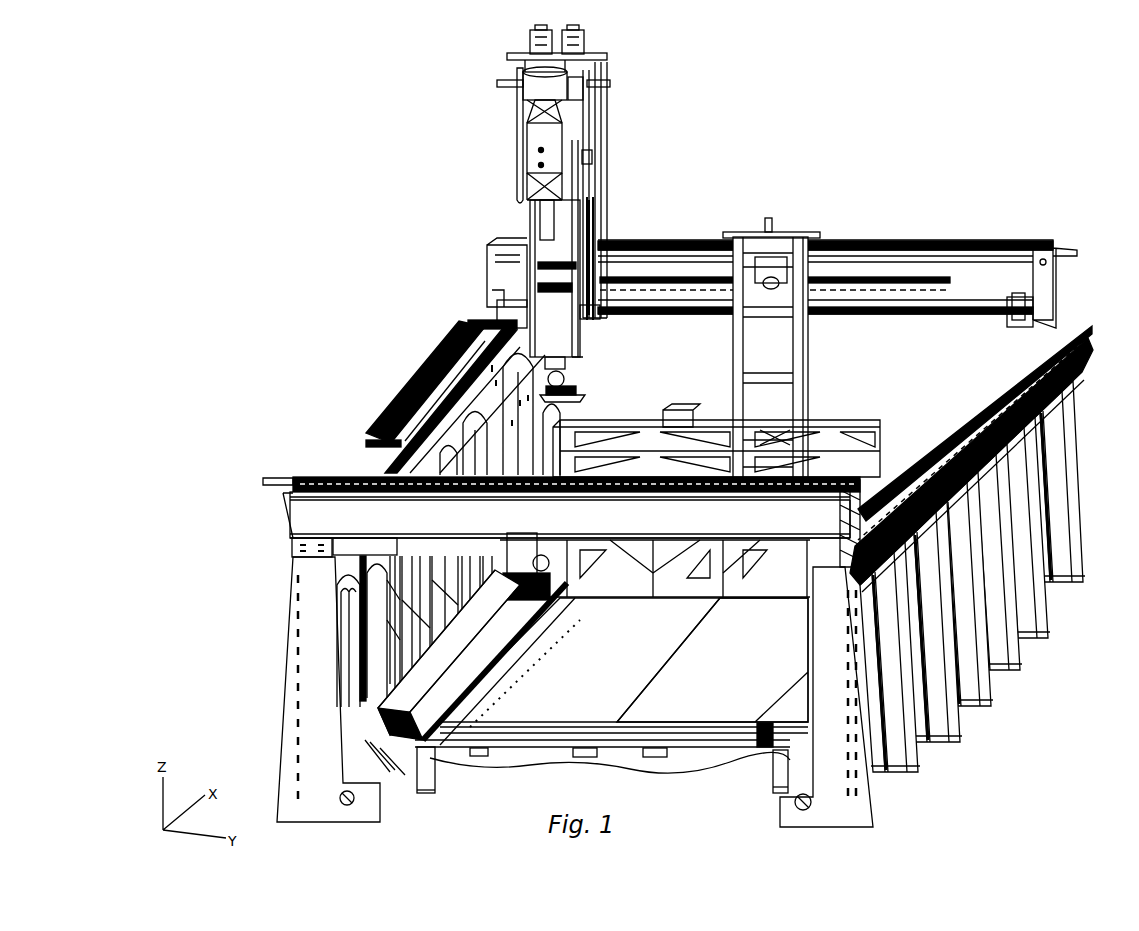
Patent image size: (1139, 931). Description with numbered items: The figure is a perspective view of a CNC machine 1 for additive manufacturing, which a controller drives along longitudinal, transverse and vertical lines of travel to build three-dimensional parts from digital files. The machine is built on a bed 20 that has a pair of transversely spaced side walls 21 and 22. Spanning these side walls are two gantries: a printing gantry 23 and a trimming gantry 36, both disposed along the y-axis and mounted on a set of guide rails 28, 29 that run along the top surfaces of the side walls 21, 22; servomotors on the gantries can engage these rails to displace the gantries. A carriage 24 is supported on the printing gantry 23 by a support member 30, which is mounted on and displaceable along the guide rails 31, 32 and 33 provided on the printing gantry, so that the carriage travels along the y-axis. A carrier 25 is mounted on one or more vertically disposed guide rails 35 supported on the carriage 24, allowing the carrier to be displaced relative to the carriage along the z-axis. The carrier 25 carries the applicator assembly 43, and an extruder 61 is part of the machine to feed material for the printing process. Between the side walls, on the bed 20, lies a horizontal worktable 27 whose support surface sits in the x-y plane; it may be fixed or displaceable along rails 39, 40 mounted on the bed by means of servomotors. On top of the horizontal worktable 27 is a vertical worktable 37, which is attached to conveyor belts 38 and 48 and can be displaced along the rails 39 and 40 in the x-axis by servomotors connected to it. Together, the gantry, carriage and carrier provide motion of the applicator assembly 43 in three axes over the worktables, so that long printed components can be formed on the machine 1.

The CNC machine 1 is at (912, 135).
The bed 20 is at (563, 752).
The side wall 21 is at (290, 650).
The side wall 22 is at (1079, 456).
The printing gantry 23 is at (1030, 250).
The carriage 24 is at (604, 191).
The carrier 25 is at (520, 216).
The horizontal worktable 27 is at (674, 656).
The guide rail 28 is at (402, 446).
The guide rail 29 is at (947, 405).
The support member 30 is at (611, 222).
The guide rail 31 is at (727, 238).
The guide rail 32 is at (688, 238).
The guide rail 33 is at (667, 310).
The vertically disposed guide rail 35 is at (588, 316).
The trimming gantry 36 is at (328, 474).
The vertical worktable 37 is at (654, 420).
The conveyor belt 38 is at (607, 697).
The rail 39 is at (463, 735).
The rail 40 is at (773, 743).
The applicator assembly 43 is at (548, 398).
The conveyor belt 48 is at (748, 697).
The extruder 61 is at (586, 197).